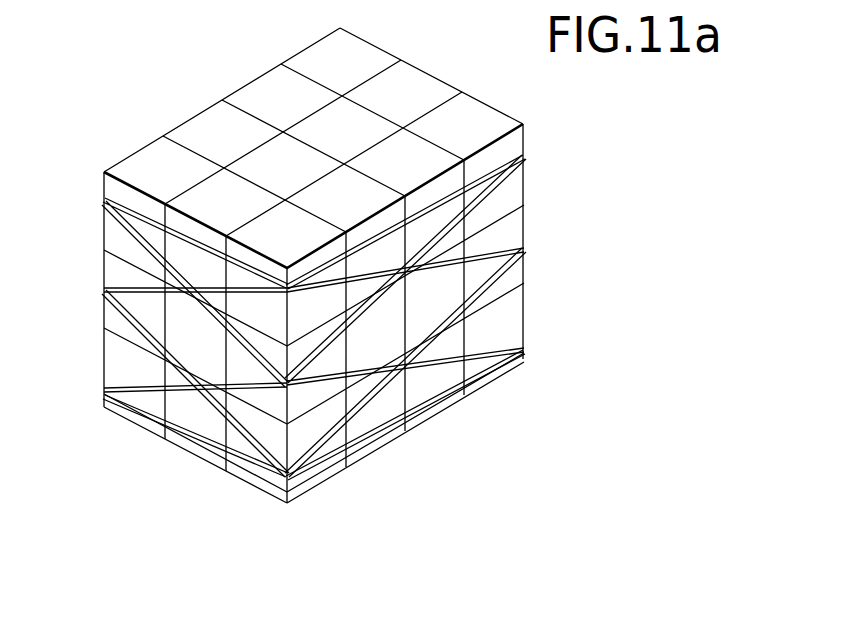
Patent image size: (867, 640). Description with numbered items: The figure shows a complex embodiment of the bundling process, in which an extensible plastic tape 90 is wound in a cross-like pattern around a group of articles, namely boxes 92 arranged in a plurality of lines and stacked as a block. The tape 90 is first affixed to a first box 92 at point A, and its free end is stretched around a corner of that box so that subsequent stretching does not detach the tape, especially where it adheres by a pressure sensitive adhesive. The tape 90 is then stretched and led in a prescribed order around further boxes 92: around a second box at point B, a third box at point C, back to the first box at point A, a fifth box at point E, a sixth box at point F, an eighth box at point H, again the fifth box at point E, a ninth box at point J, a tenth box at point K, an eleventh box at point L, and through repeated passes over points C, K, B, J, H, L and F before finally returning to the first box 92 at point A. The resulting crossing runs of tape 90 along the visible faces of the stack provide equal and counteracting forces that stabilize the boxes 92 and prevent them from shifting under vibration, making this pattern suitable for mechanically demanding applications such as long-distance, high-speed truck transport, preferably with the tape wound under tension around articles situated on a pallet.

The boxes 92 is at (257, 100).
The extensible plastic tape 90 is at (185, 440).
The point K is at (104, 202).
The point H is at (104, 288).
The point L is at (286, 291).
The point A is at (104, 397).
The point B is at (280, 388).
The point E is at (288, 477).
The point C is at (524, 160).
The point F is at (524, 250).
The point J is at (524, 352).